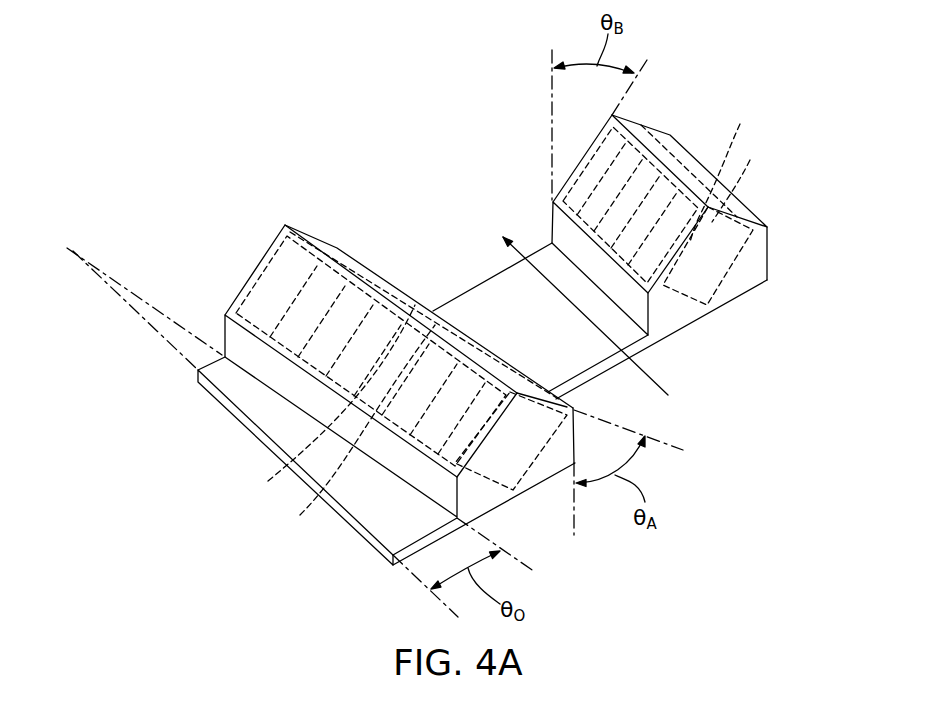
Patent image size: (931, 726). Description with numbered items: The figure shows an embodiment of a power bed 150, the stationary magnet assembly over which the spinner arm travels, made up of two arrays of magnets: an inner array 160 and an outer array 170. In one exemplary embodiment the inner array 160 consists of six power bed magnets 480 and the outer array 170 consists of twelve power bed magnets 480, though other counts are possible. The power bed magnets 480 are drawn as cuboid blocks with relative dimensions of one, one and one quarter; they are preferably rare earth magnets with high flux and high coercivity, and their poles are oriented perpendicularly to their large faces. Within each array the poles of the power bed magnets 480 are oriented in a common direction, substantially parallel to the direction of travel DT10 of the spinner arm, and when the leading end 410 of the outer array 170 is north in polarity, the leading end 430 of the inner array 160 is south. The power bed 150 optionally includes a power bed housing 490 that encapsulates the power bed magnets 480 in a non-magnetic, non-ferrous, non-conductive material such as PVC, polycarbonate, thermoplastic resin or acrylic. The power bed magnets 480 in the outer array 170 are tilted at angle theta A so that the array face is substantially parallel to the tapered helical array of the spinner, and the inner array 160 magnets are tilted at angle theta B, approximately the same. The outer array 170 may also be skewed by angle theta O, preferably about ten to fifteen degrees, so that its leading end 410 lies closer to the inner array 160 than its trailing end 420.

The power bed 150 is at (391, 169).
The inner array 160 is at (767, 250).
The outer array 170 is at (404, 291).
The leading end 410 is at (537, 473).
The trailing end 420 is at (260, 262).
The leading end 430 is at (747, 278).
The power bed magnets 480 is at (511, 320).
The power bed housing 490 is at (560, 230).
The direction of travel DT10 is at (655, 378).